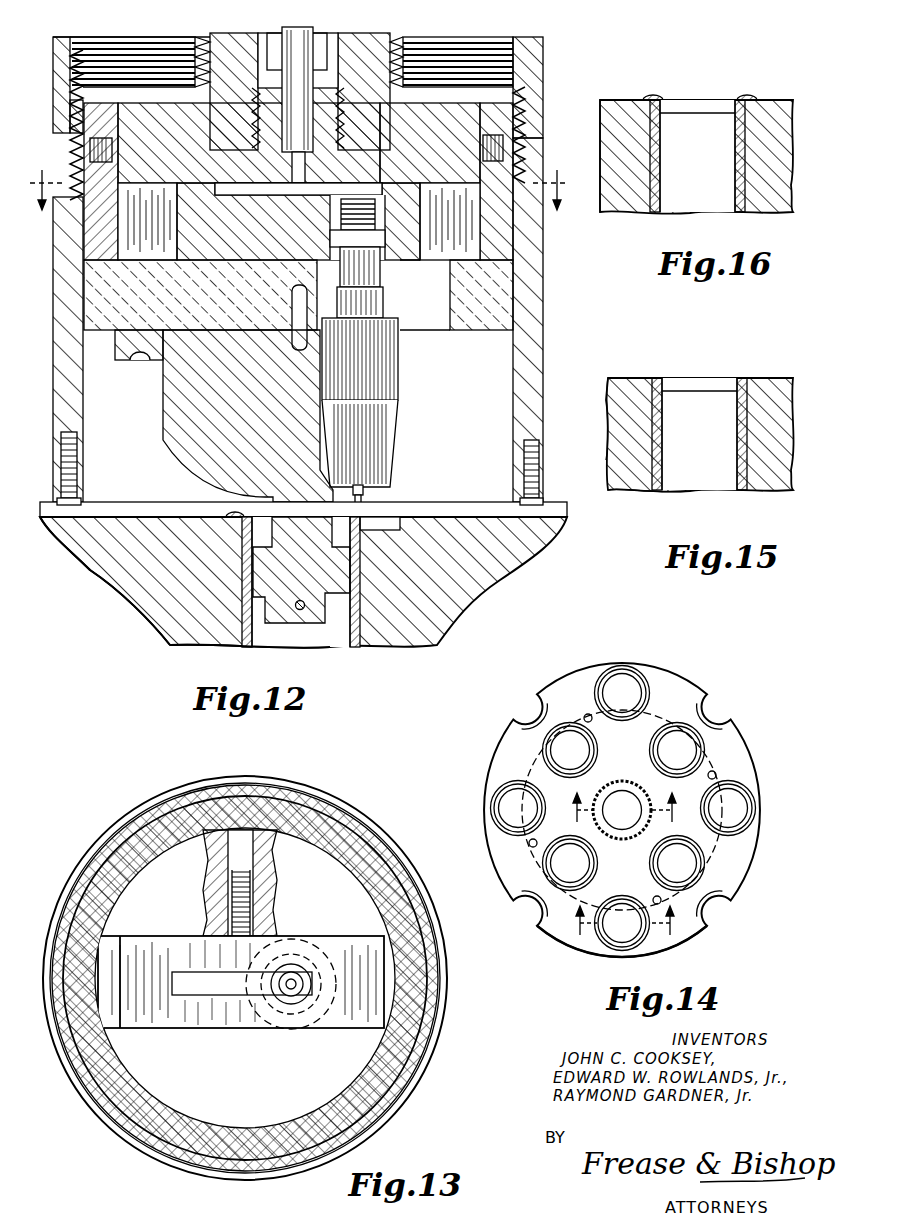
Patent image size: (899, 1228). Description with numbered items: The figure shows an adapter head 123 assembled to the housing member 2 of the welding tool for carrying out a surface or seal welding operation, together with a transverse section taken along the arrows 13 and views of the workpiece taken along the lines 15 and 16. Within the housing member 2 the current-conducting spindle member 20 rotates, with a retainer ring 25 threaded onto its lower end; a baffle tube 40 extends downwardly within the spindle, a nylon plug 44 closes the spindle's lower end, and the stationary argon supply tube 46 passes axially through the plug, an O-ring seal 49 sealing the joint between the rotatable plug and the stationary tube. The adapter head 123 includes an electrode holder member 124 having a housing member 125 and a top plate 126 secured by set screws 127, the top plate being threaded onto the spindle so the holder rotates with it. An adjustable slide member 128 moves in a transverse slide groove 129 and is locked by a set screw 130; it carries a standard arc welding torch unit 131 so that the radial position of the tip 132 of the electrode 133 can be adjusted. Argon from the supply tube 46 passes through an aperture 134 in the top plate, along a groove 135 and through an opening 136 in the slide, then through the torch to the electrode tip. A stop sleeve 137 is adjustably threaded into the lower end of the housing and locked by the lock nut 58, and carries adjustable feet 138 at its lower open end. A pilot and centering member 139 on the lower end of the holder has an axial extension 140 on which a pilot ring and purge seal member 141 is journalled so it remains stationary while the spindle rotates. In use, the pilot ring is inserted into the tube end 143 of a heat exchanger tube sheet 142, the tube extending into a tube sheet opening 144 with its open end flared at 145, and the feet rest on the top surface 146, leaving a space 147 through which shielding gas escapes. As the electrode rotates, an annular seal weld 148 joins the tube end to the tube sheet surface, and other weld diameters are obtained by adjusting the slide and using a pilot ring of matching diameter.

In FIG. 12, the housing member 2 is at (540, 62).
In FIG. 12, the worm assembly box 13 is at (299, 200).
In FIG. 14, the screws 15 is at (627, 920).
In FIG. 12, the insulating material sleeve member 16 is at (415, 42).
In FIG. 14, the insulating material sleeve member 16 is at (624, 807).
In FIG. 12, the current-conducting spindle member 20 is at (215, 88).
In FIG. 12, the retainer ring 25 is at (426, 46).
In FIG. 12, the baffle tube 40 is at (270, 50).
In FIG. 12, the nylon plug 44 is at (332, 88).
In FIG. 12, the argon supply tube 46 is at (297, 105).
In FIG. 12, the O-ring seal 49 is at (280, 118).
In FIG. 12, the lock nut 58 is at (535, 115).
In FIG. 12, the adapter head 123 is at (552, 340).
In FIG. 13, the adapter head 123 is at (348, 812).
In FIG. 12, the electrode holder member 124 is at (500, 285).
In FIG. 13, the electrode holder member 124 is at (402, 1004).
In FIG. 12, the housing member 125 is at (475, 328).
In FIG. 13, the housing member 125 is at (245, 978).
In FIG. 12, the top plate 126 is at (447, 182).
In FIG. 12, the set screws 127 is at (92, 146).
In FIG. 12, the adjustable slide member 128 is at (256, 252).
In FIG. 13, the adjustable slide member 128 is at (147, 966).
In FIG. 12, the transverse slide groove 129 is at (133, 238).
In FIG. 13, the transverse slide groove 129 is at (122, 940).
In FIG. 13, the set screw 130 is at (262, 906).
In FIG. 12, the arc welding torch unit 131 is at (395, 410).
In FIG. 13, the arc welding torch unit 131 is at (322, 976).
In FIG. 12, the electrode tip 132 is at (362, 498).
In FIG. 12, the electrode 133 is at (364, 487).
In FIG. 12, the aperture 134 is at (306, 168).
In FIG. 12, the groove 135 is at (260, 196).
In FIG. 13, the groove 135 is at (216, 1000).
In FIG. 12, the opening 136 is at (372, 206).
In FIG. 13, the opening 136 is at (287, 992).
In FIG. 12, the stop sleeve 137 is at (544, 370).
In FIG. 14, the stop sleeve 137 is at (537, 750).
In FIG. 13, the stop sleeve 137 is at (118, 1138).
In FIG. 12, the adjustable feet 138 is at (542, 512).
In FIG. 14, the adjustable feet 138 is at (588, 712).
In FIG. 12, the pilot and centering member 139 is at (190, 436).
In FIG. 12, the axial extension 140 is at (306, 611).
In FIG. 12, the pilot ring and purge seal member 141 is at (258, 598).
In FIG. 12, the heat exchanger tube sheet 142 is at (500, 583).
In FIG. 16, the heat exchanger tube sheet 142 is at (775, 205).
In FIG. 15, the heat exchanger tube sheet 142 is at (775, 470).
In FIG. 14, the heat exchanger tube sheet 142 is at (747, 877).
In FIG. 12, the tube end 143 is at (352, 633).
In FIG. 16, the tube end 143 is at (665, 200).
In FIG. 15, the tube end 143 is at (738, 470).
In FIG. 14, the tube end 143 is at (645, 684).
In FIG. 12, the tube sheet opening 144 is at (235, 625).
In FIG. 15, the tube sheet opening 144 is at (652, 468).
In FIG. 12, the flared open end 145 is at (366, 530).
In FIG. 15, the flared open end 145 is at (748, 378).
In FIG. 12, the top surface 146 is at (95, 547).
In FIG. 16, the top surface 146 is at (612, 100).
In FIG. 15, the top surface 146 is at (630, 378).
In FIG. 14, the top surface 146 is at (727, 877).
In FIG. 12, the space 147 is at (470, 510).
In FIG. 12, the seal weld 148 is at (246, 525).
In FIG. 16, the seal weld 148 is at (750, 101).
In FIG. 14, the seal weld 148 is at (614, 784).